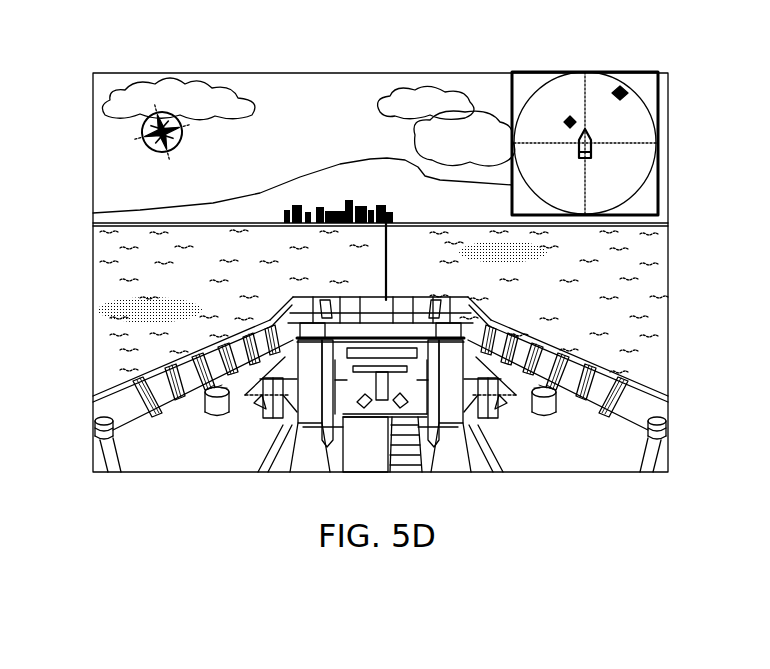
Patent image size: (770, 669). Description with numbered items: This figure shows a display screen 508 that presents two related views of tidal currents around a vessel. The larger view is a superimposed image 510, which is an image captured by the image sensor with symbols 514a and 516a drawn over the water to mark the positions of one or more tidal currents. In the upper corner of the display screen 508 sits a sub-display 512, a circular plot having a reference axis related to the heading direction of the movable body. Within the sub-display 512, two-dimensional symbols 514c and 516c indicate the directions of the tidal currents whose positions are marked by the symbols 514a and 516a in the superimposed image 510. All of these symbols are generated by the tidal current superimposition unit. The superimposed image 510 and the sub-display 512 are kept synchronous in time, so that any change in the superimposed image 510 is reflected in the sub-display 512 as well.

The display screen 508 is at (330, 74).
The superimposed image 510 is at (648, 283).
The sub-display 512 is at (660, 95).
The symbol 514a is at (505, 264).
The two-dimensional symbol 514c is at (618, 93).
The symbol 516a is at (150, 296).
The two-dimensional symbol 516c is at (568, 118).